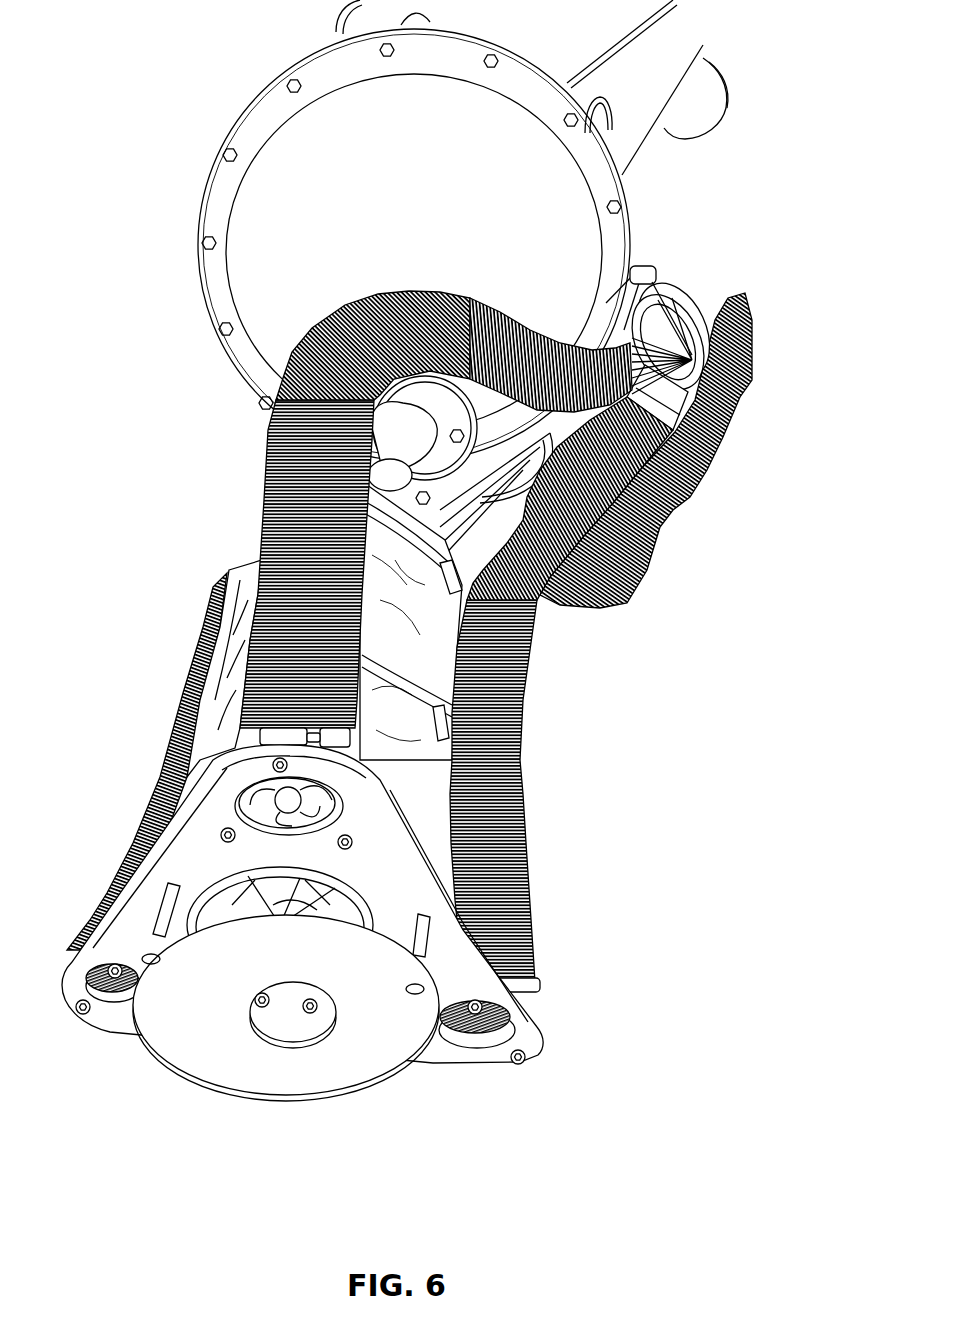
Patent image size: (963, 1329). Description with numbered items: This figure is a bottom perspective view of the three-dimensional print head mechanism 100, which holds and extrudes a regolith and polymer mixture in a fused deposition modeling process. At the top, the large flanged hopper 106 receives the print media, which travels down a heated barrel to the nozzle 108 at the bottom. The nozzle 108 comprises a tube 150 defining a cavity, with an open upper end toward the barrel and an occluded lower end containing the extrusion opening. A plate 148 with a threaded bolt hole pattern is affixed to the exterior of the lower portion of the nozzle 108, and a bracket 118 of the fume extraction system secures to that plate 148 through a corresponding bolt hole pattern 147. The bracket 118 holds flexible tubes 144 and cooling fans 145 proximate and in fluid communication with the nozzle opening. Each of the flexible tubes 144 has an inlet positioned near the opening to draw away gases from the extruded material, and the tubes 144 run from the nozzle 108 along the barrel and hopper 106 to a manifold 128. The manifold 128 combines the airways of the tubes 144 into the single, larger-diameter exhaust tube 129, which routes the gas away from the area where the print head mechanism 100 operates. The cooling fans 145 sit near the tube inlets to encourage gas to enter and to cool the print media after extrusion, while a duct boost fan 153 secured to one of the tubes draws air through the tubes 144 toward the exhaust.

The 3D print head mechanism 100 is at (775, 366).
The hopper 106 is at (205, 125).
The nozzle 108 is at (122, 1041).
The bracket 118 is at (548, 1028).
The manifold 128 is at (681, 288).
The exhaust tube 129 is at (703, 502).
The flexible tubes 144 is at (335, 290).
The cooling fans 145 is at (322, 912).
The bolt hole pattern 147 is at (447, 963).
The plate 148 is at (174, 1077).
The tube 150 is at (740, 432).
The duct boost fan 153 is at (317, 827).